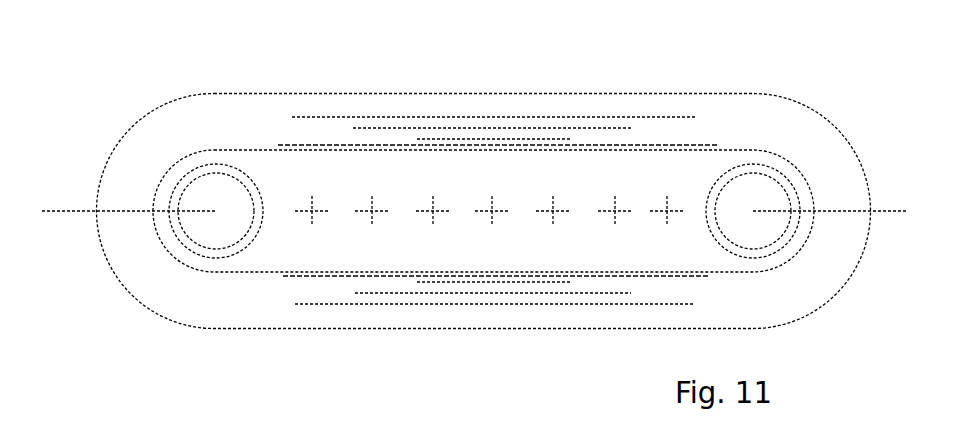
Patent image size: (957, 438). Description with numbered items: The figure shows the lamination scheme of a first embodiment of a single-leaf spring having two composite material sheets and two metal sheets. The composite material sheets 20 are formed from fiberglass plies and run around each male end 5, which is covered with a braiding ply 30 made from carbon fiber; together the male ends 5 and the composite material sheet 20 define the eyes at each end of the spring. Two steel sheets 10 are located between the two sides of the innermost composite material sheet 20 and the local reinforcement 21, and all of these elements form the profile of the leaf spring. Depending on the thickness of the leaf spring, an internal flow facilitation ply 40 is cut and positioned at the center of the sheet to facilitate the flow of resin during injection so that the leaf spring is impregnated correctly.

The male end 5 is at (476, 210).
The steel sheet 10 is at (310, 145).
The composite material sheet 20 is at (777, 153).
The local reinforcement 21 is at (555, 138).
The braiding ply 30 is at (188, 250).
The internal flow facilitation ply 40 is at (312, 211).